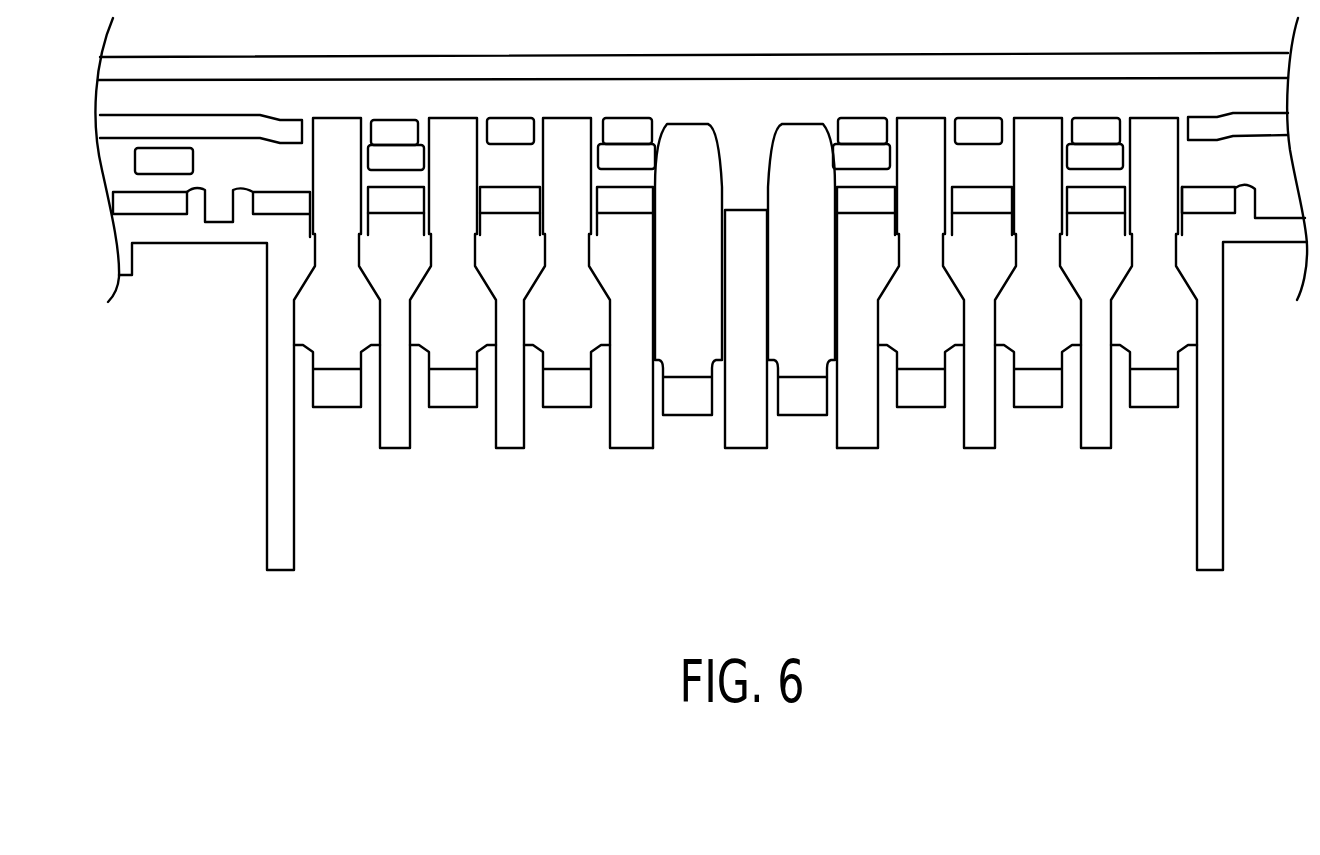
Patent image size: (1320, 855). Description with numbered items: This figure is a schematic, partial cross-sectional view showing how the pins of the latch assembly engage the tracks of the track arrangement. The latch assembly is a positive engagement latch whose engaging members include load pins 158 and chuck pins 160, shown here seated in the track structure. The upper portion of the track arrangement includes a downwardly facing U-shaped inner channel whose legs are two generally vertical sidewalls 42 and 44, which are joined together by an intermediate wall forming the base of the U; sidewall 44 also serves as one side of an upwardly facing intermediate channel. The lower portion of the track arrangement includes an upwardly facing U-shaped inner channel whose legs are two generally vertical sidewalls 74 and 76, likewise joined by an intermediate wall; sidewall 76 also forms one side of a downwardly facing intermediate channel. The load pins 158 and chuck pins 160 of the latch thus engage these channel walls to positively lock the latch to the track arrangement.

The sidewall 42 is at (983, 198).
The sidewall 44 is at (512, 128).
The sidewall 74 is at (147, 160).
The sidewall 76 is at (305, 66).
The load pins 158 is at (337, 408).
The chuck pins 160 is at (686, 416).